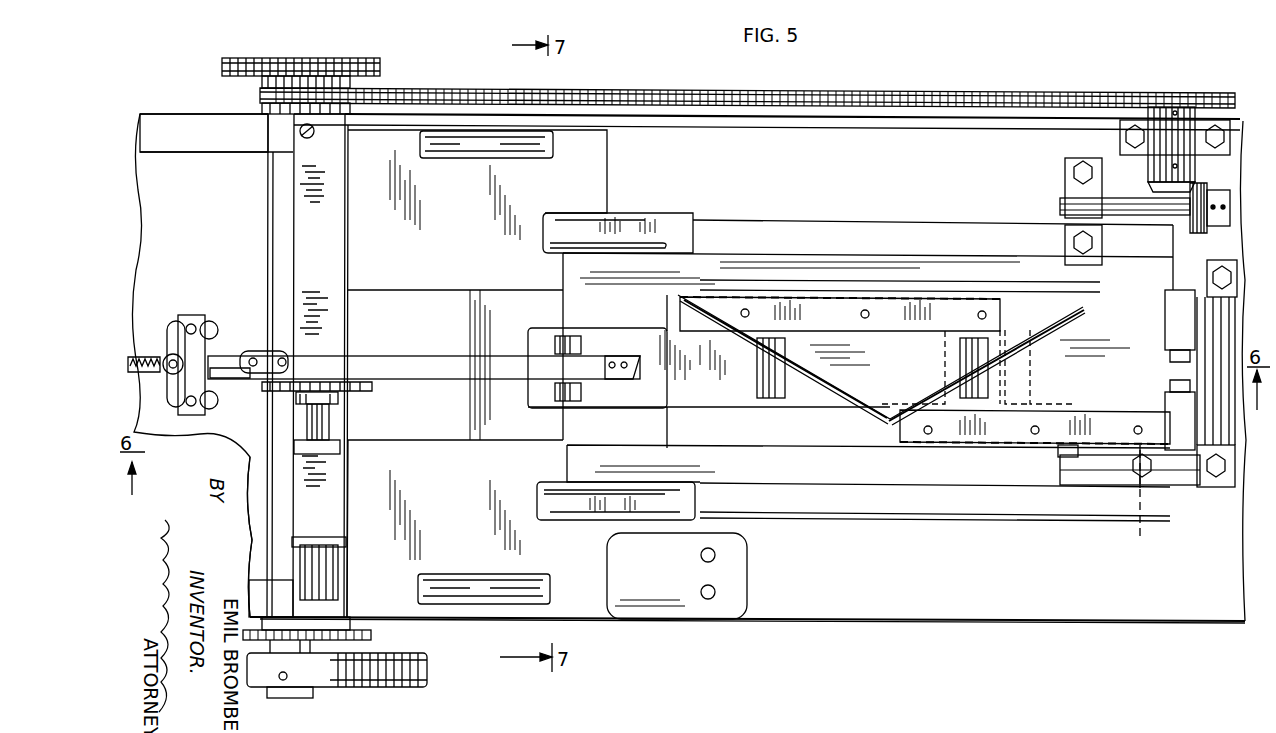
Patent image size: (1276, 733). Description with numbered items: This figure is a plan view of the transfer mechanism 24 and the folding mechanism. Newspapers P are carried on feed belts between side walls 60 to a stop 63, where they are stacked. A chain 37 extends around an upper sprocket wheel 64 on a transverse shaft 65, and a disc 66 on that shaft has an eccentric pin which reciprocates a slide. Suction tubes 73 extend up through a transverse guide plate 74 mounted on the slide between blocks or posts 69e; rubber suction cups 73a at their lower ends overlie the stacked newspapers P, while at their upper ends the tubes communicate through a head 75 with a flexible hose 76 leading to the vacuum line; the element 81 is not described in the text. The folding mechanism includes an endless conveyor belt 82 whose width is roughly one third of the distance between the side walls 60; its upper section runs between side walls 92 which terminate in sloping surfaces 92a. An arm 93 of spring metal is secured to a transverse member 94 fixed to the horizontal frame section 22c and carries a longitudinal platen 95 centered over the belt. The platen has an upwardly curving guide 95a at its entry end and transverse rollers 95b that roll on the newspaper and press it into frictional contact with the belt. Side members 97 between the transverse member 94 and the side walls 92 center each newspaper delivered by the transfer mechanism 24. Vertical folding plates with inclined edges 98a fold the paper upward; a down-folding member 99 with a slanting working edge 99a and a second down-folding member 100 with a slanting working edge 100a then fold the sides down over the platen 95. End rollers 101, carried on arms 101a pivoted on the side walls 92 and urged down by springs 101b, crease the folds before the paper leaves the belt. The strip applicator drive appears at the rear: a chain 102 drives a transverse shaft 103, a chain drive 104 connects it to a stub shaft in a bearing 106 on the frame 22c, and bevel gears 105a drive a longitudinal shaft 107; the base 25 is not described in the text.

The newspaper P is at (130, 168).
The transfer mechanism 24 is at (170, 104).
The side walls 60 is at (215, 152).
The transverse member 94 is at (300, 260).
The chain 102 is at (343, 66).
The transverse shaft 103 is at (312, 62).
The chain drive 104 is at (641, 90).
The horizontal frame section 22c is at (1068, 614).
The base 25 is at (870, 622).
The side members 97 is at (470, 148).
The inclined edge 98a is at (655, 240).
The working edge 99a is at (722, 310).
The down-folding member 99 is at (760, 310).
The second down-folding member 100 is at (1020, 436).
The side walls 92 is at (893, 297).
The sloping surfaces 92a is at (603, 455).
The arm 93 is at (422, 358).
The platen 95 is at (740, 392).
The guide 95a is at (505, 320).
The transverse rollers 95b is at (572, 399).
The endless conveyor belt 82 is at (432, 444).
The transverse guide plate 74 is at (196, 320).
The head 75 is at (176, 334).
The flexible hose 76 is at (163, 360).
The rubber suction cups 73a is at (214, 328).
The spring 81 is at (140, 378).
The suction tubes 73 is at (194, 422).
The blocks or posts 69e is at (212, 386).
The disc 66 is at (374, 387).
The transverse shaft 65 is at (330, 422).
The stop 63 is at (268, 469).
The chain 37 is at (248, 602).
The upper sprocket wheel 64 is at (372, 634).
The bearing 106 is at (1167, 122).
The bevel gears 105a is at (1214, 200).
The longitudinal shaft 107 is at (1117, 203).
The working edge 100a is at (1040, 300).
The end rollers 101 is at (1215, 256).
The arms 101a is at (1095, 458).
The spring 101b is at (1146, 502).